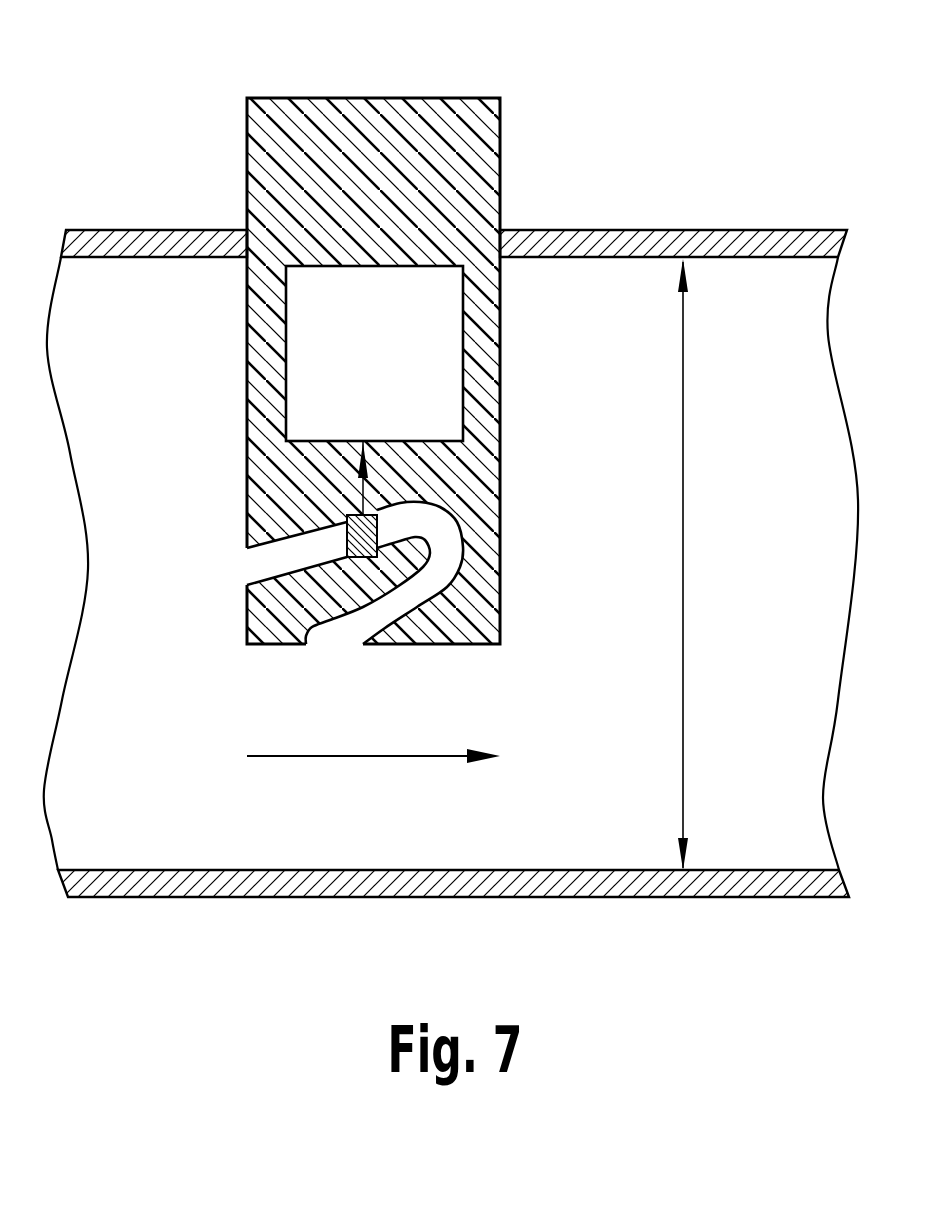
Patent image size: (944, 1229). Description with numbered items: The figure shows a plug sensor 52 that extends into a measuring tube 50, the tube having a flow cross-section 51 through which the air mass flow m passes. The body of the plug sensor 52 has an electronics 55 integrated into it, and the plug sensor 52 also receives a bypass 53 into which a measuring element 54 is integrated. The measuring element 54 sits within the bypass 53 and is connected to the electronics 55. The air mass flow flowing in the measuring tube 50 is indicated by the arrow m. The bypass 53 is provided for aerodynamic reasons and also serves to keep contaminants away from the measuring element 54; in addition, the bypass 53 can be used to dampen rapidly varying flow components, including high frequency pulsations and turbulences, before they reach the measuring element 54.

The measuring tube 50 is at (748, 243).
The flow cross-section 51 is at (684, 574).
The plug sensor 52 is at (391, 133).
The bypass 53 is at (276, 560).
The measuring element 54 is at (377, 527).
The electronics 55 is at (423, 365).
The air mass flow m is at (375, 757).